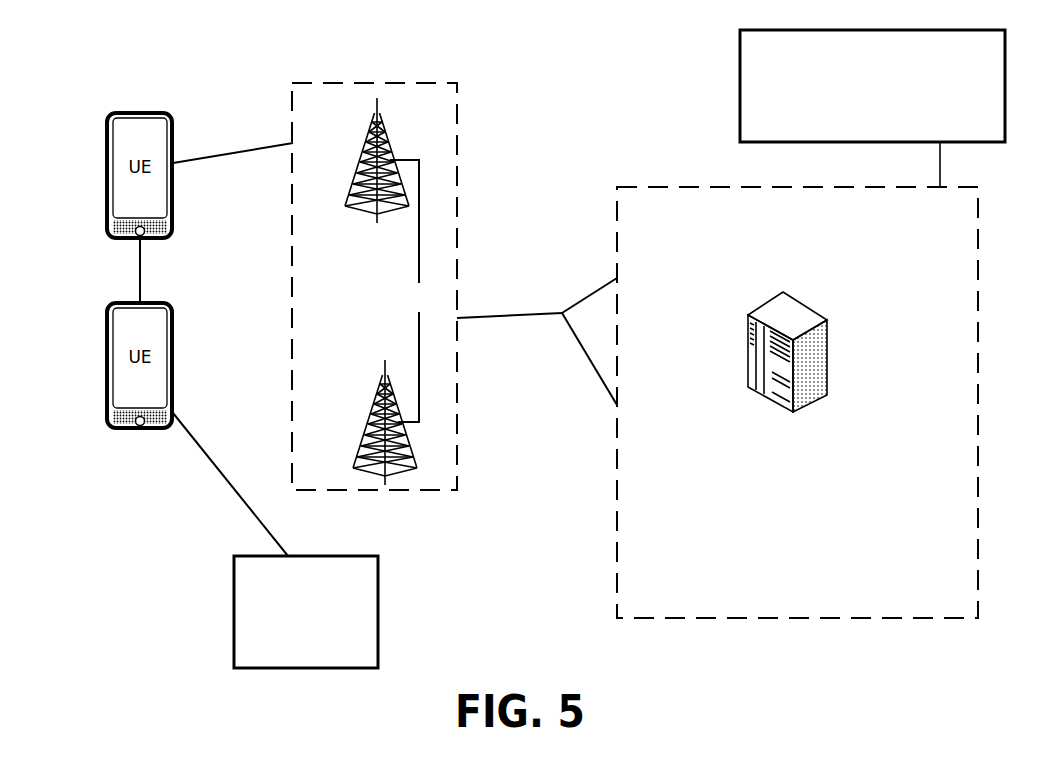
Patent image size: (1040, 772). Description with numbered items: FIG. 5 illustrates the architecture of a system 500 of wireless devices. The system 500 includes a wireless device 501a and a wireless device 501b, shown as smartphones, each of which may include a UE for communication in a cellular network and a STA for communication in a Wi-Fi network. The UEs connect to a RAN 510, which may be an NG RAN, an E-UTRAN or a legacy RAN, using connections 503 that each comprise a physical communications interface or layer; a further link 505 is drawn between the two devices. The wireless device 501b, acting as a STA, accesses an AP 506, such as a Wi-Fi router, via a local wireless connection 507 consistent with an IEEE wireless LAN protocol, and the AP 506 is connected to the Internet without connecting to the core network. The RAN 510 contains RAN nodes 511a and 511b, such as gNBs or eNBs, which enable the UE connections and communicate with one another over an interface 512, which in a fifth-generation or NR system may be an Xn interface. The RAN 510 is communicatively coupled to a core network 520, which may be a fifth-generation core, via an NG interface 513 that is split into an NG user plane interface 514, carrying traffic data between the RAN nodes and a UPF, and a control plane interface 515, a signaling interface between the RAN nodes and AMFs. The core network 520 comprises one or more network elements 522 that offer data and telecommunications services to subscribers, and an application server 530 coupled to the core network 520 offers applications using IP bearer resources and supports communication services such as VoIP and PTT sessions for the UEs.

The system 500 is at (588, 76).
The wireless device 501a is at (122, 117).
The wireless device 501b is at (122, 306).
The connection 503 is at (268, 149).
The direct link between UEs 505 is at (141, 262).
The AP 506 is at (234, 605).
The connection 507 is at (220, 471).
The RAN 510 is at (389, 82).
The RAN node 511a is at (363, 165).
The RAN node 511b is at (382, 400).
The interface 512 is at (407, 291).
The NG interface 513 is at (537, 313).
The NG user plane (NG-U) interface 514 is at (600, 375).
The control plane (NG-C) interface 515 is at (603, 283).
The core network (CN) 520 is at (912, 620).
The network elements 522 is at (804, 301).
The application server 530 is at (740, 82).